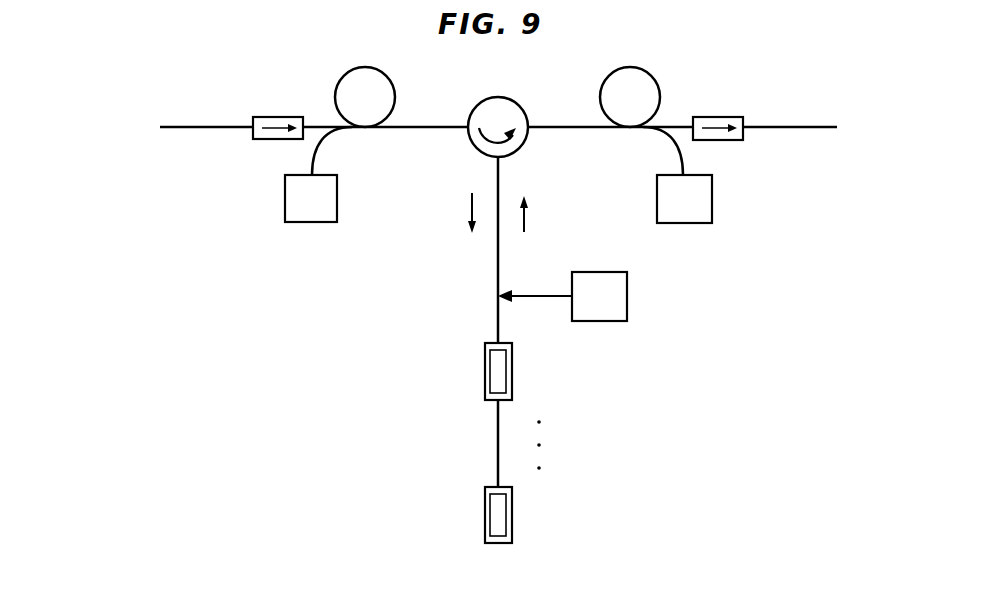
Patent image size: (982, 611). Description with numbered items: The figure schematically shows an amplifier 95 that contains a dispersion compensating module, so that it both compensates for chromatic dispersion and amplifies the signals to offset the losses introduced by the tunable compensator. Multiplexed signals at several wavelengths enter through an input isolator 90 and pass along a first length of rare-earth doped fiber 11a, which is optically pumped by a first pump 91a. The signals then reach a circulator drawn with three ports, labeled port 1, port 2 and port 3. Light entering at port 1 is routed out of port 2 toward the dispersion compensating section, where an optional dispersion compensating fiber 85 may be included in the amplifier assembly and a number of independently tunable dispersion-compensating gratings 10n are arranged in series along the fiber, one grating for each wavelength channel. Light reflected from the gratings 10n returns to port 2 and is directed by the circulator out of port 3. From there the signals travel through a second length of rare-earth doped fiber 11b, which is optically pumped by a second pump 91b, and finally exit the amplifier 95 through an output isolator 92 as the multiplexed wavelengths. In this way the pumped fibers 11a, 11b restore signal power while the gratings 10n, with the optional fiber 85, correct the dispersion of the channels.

The amplifier 95 is at (283, 352).
The input isolator 90 is at (273, 116).
The output isolator 92 is at (714, 116).
The first length of rare-earth doped fiber 11a is at (363, 66).
The second length of rare-earth doped fiber 11b is at (629, 66).
The first pump 91a is at (337, 195).
The second pump 91b is at (712, 195).
The circulator port 1 is at (458, 115).
The circulator port 2 is at (499, 250).
The circulator port 3 is at (538, 115).
The dispersion compensating fiber 85 is at (627, 292).
The tunable dispersion-compensating gratings 10n is at (455, 422).